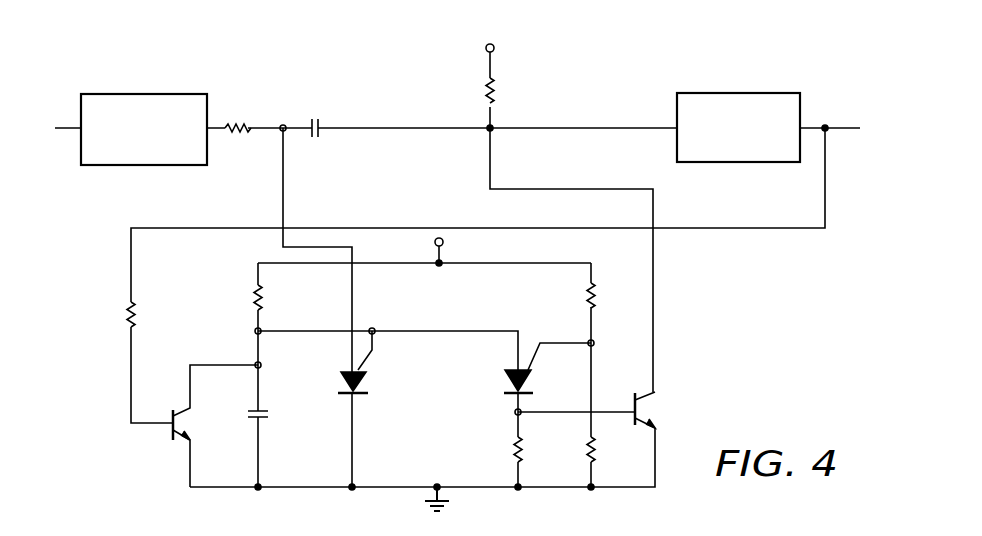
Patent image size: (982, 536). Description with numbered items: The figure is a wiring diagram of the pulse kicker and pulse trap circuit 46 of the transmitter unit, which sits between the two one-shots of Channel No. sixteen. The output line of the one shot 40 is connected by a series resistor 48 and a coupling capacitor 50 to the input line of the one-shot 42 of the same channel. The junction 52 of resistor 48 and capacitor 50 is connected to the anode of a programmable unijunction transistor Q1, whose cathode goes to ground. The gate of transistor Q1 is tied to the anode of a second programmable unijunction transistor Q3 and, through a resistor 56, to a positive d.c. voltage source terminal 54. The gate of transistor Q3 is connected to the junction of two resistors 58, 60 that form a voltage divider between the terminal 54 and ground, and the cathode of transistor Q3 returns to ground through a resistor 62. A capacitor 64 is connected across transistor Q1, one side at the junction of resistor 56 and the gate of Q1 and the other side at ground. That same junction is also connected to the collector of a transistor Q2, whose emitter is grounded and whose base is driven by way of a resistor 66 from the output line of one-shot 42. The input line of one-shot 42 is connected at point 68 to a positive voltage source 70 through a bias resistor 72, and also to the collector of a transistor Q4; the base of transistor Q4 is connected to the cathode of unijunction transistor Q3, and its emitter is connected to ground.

The one shot 40 is at (128, 94).
The one-shot 42 is at (748, 93).
The threshold detector circuit 46 is at (105, 298).
The series resistor 48 is at (236, 122).
The coupling capacitor 50 is at (324, 120).
The junction 52 is at (284, 122).
The positive d.c. voltage source terminal 54 is at (435, 242).
The resistor 56 is at (262, 296).
The resistor 58 is at (595, 297).
The resistor 60 is at (595, 450).
The resistor 62 is at (516, 450).
The capacitor 64 is at (264, 418).
The resistor 66 is at (134, 315).
The point 68 is at (493, 125).
The positive voltage source 70 is at (486, 48).
The bias resistor 72 is at (488, 89).
The programmable unijunction transistor Q1 is at (365, 376).
The transistor Q2 is at (173, 430).
The programmable unijunction transistor Q3 is at (531, 376).
The transistor Q4 is at (645, 398).